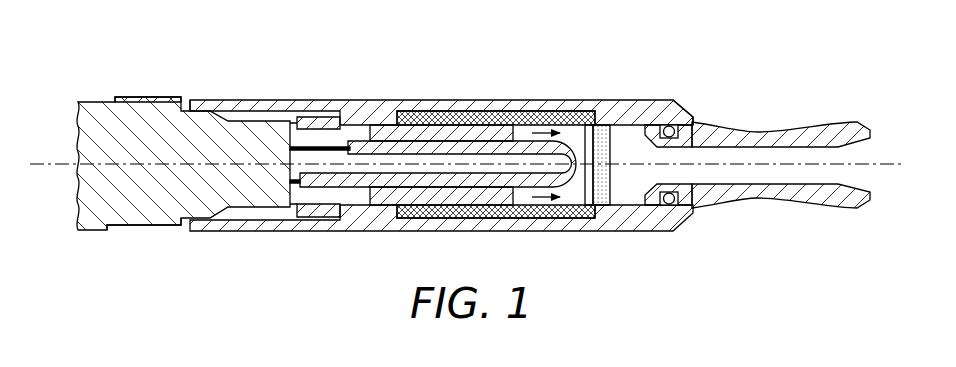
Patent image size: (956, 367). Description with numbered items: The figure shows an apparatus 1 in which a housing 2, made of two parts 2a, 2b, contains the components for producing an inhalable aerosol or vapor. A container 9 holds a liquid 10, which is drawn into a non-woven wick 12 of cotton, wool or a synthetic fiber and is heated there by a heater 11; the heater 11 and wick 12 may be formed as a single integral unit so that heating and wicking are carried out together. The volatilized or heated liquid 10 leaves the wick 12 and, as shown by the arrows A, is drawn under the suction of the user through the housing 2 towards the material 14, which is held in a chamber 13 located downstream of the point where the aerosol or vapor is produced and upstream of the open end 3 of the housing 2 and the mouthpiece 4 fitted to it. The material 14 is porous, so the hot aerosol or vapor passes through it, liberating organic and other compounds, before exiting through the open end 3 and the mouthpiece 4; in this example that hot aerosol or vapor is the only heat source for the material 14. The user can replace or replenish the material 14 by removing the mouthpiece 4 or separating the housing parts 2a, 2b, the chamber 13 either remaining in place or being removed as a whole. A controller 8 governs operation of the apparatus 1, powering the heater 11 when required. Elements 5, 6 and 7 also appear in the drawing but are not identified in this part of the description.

The apparatus 1 is at (583, 50).
The housing 2 is at (288, 100).
The first part of the housing 2a is at (665, 108).
The second part of the housing 2b is at (223, 100).
The open end of the housing 3 is at (757, 135).
The mouthpiece 4 is at (802, 127).
The O-ring seals 5 is at (668, 205).
The shoulder of body 6 is at (181, 241).
The body 7 is at (120, 224).
The controller 8 is at (330, 217).
The container 9 is at (462, 111).
The liquid 10 is at (507, 117).
The heater 11 is at (428, 182).
The wick 12 is at (410, 130).
The chamber 13 is at (610, 195).
The material 14 is at (601, 127).
The arrows A is at (553, 127).